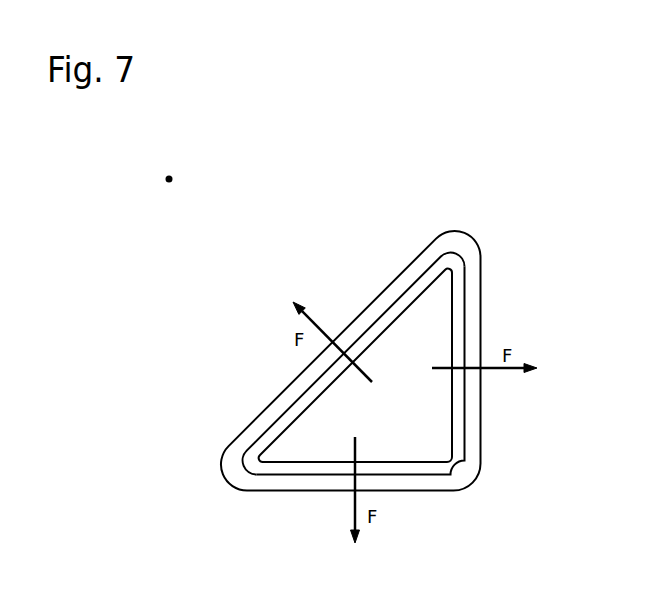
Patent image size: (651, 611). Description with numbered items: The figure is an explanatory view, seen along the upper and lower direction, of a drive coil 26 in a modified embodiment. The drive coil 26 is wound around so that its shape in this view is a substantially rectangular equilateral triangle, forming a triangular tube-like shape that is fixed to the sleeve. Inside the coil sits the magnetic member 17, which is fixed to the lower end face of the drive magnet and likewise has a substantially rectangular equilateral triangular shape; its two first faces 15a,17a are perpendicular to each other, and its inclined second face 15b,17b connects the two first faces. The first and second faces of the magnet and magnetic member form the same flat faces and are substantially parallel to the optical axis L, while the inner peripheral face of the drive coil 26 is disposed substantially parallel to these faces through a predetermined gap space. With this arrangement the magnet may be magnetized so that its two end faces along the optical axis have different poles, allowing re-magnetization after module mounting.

The magnetic member 17 is at (408, 351).
The first side faces and first end faces 15a,17a is at (453, 432).
The second side face and second end face 15b,17b is at (278, 432).
The drive coil 26 is at (473, 482).
The optical axis L is at (172, 176).